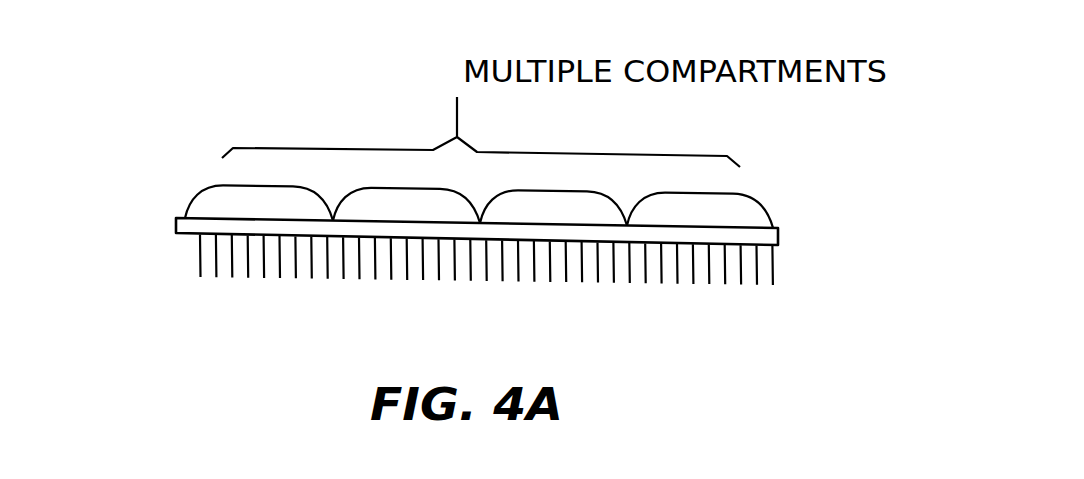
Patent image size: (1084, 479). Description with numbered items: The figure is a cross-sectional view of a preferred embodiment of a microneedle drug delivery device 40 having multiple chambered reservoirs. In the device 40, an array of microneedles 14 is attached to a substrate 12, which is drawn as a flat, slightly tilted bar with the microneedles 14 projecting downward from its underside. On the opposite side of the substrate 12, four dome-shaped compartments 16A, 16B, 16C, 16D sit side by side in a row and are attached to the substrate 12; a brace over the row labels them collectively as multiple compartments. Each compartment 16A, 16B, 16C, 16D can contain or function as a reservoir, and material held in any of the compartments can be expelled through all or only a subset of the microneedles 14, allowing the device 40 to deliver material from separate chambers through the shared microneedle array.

The device 40 is at (125, 188).
The substrate 12 is at (779, 236).
The microneedles 14 is at (775, 267).
The compartment 16A is at (259, 202).
The compartment 16B is at (406, 205).
The compartment 16C is at (553, 207).
The compartment 16D is at (700, 210).